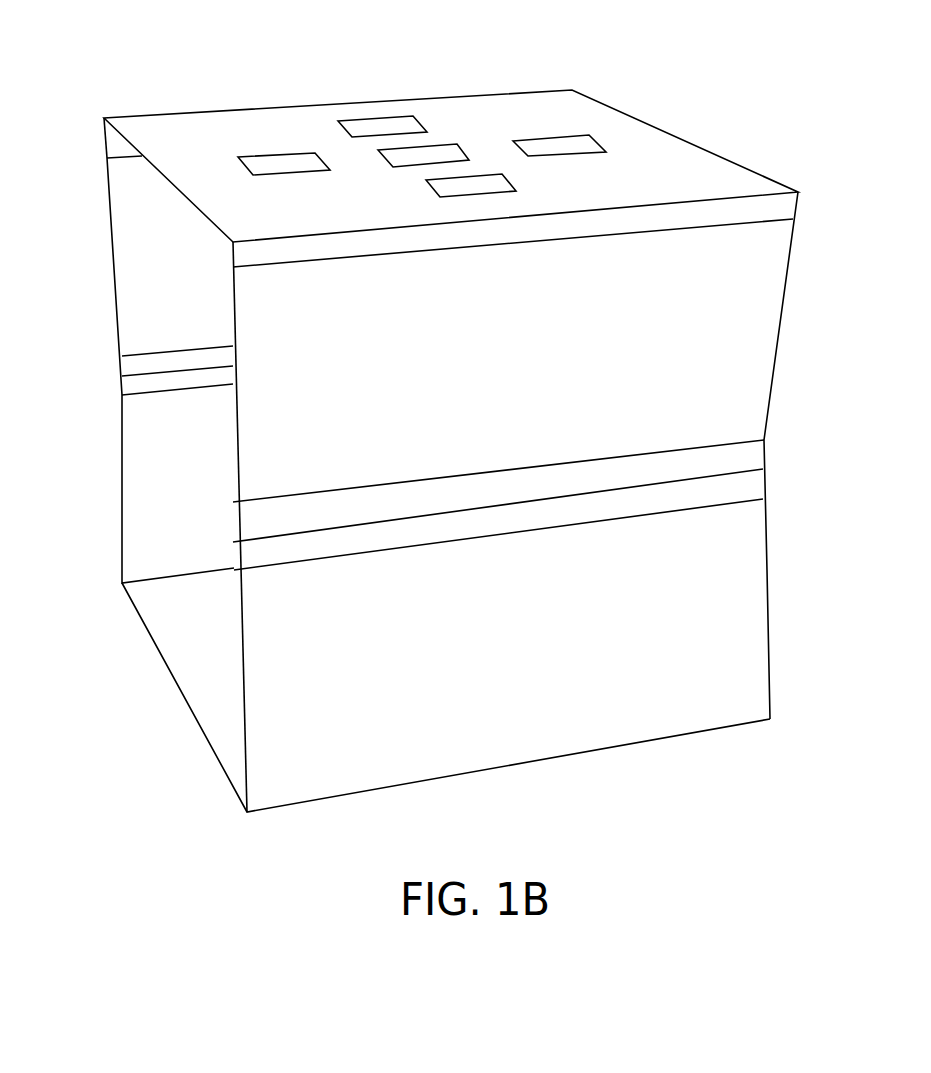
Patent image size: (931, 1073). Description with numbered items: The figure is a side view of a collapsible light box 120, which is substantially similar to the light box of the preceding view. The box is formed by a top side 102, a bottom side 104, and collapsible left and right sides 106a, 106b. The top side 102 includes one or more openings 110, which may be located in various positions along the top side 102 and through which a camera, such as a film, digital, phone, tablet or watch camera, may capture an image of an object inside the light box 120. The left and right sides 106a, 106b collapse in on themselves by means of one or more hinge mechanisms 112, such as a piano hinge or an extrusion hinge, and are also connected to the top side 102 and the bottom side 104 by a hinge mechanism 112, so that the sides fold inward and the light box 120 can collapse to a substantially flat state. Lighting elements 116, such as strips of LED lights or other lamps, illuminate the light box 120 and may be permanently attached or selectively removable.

The collapsible light box 120 is at (118, 41).
The top side 102 is at (700, 168).
The bottom side 104 is at (216, 731).
The left side 106a is at (133, 305).
The right side 106b is at (762, 345).
The openings 110 is at (560, 148).
The hinge mechanism 112 is at (190, 376).
The lighting elements 116 is at (115, 143).